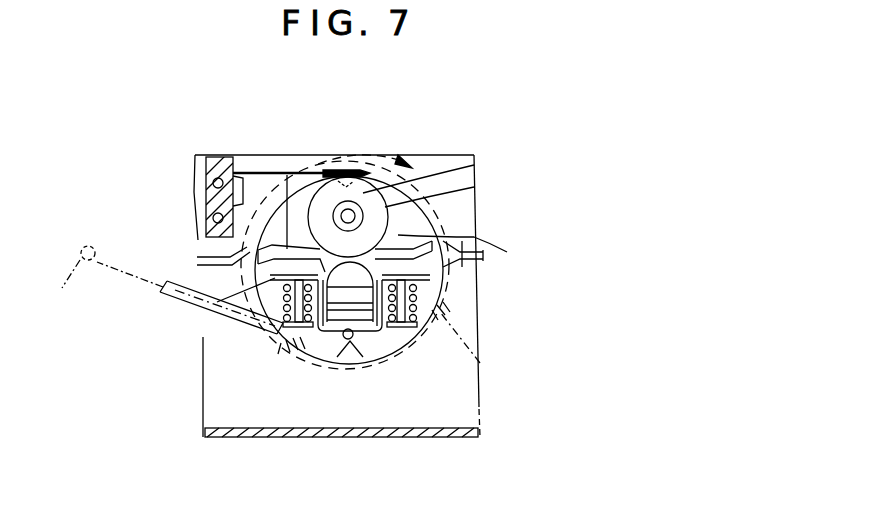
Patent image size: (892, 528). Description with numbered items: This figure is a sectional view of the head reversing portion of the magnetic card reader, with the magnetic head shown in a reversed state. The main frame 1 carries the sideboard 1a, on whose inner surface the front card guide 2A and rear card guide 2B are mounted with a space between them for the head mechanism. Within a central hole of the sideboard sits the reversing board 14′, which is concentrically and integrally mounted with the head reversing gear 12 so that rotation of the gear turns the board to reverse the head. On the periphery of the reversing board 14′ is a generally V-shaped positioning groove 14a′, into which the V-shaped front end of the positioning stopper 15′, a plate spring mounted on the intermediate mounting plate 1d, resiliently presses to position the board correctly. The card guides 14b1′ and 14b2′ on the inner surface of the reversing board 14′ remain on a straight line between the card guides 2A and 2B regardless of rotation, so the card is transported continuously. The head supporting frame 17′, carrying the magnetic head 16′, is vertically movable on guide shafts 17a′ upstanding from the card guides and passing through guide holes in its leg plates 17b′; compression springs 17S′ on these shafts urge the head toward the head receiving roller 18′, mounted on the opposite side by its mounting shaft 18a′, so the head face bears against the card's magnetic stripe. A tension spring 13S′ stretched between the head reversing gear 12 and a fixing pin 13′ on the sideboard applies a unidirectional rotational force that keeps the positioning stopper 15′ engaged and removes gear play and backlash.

The main frame 1 is at (220, 442).
The sideboard 1a is at (464, 153).
The intermediate mounting plate 1d is at (193, 166).
The front card guide 2A is at (472, 272).
The rear card guide 2B is at (200, 257).
The head reversing gear 12 is at (480, 363).
The fixing pin 13′ is at (81, 303).
The tension spring 13S′ is at (187, 303).
The reversing board 14′ is at (474, 187).
The positioning groove 14a′ is at (431, 153).
The card guide 14b1′ is at (622, 242).
The card guide 14b2′ is at (288, 174).
The positioning stopper 15′ is at (253, 172).
The magnetic head 16′ is at (393, 222).
The head supporting frame 17′ is at (372, 335).
The guide shaft 17a′ is at (283, 328).
The leg plate 17b′ is at (282, 340).
The compression spring 17S′ is at (270, 276).
The head receiving roller 18′ is at (464, 175).
The mounting shaft 18a′ is at (344, 210).